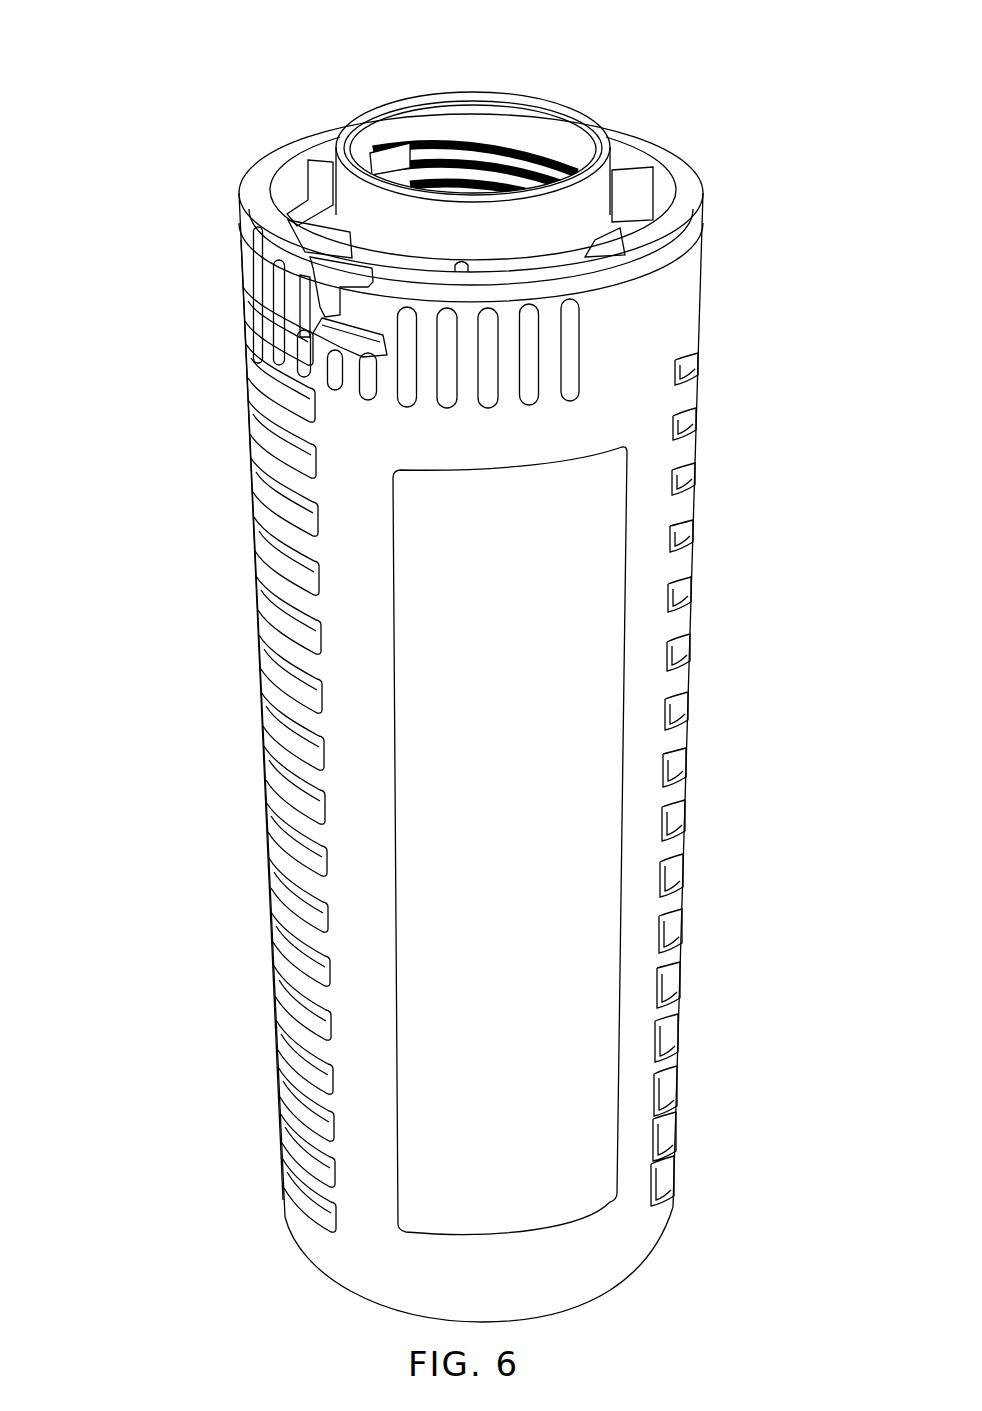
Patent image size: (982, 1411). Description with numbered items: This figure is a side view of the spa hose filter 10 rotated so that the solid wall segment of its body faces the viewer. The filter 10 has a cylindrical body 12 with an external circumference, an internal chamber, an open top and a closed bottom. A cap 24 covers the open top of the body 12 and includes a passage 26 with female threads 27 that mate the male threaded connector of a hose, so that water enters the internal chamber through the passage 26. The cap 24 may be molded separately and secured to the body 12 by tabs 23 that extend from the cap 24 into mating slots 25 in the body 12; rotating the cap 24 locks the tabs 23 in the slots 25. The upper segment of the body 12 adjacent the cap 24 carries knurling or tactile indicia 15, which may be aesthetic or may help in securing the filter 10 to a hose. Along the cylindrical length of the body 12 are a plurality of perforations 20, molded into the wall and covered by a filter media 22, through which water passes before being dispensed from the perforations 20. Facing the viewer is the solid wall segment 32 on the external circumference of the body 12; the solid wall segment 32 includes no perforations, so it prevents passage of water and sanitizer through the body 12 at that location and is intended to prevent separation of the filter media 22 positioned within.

The filter 10 is at (125, 224).
The cylindrical body 12 is at (678, 289).
The tactile indicia 15 is at (263, 299).
The perforations 20 is at (258, 422).
The filter media 22 is at (292, 783).
The tabs 23 is at (335, 336).
The cap 24 is at (670, 148).
The slots 25 is at (250, 188).
The passage 26 is at (513, 120).
The female threads 27 is at (412, 155).
The solid wall segment 32 is at (520, 710).